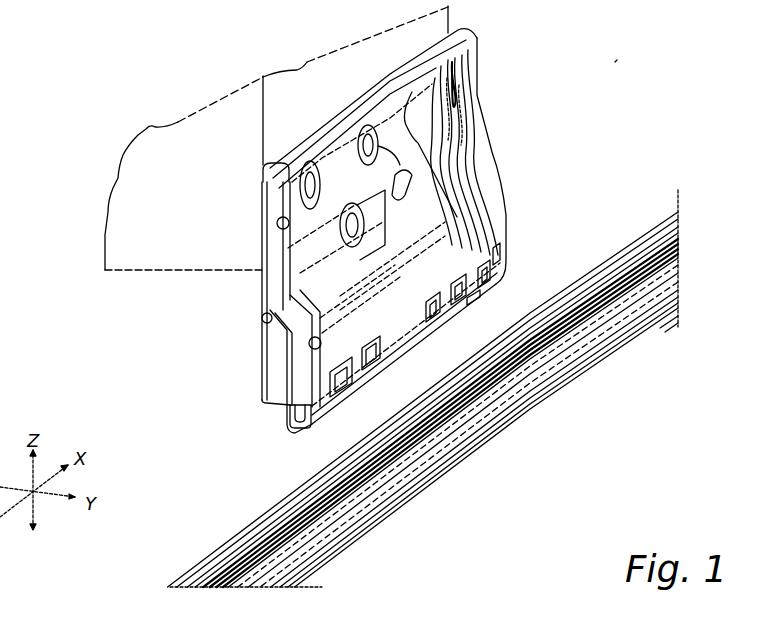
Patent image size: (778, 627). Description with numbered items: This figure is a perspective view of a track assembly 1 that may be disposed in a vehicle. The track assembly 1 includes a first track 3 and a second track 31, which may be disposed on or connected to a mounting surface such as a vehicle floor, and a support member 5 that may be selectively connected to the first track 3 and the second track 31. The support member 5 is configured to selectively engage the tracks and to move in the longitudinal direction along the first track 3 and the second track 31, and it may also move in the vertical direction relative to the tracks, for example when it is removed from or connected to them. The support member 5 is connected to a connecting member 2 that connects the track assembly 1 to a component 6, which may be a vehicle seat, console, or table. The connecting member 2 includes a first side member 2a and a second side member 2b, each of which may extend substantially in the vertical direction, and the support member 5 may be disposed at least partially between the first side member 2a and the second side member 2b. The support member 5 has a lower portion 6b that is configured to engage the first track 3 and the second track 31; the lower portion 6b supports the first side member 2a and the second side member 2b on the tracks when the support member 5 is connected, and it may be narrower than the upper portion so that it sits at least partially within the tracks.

The track assembly 1 is at (617, 61).
The connecting member 2 is at (499, 72).
The first side member 2a is at (492, 157).
The second side member 2b is at (258, 197).
The first track 3 is at (537, 412).
The second track 31 is at (683, 245).
The support member 5 is at (285, 410).
The component 6 is at (224, 135).
The lower portion 6b is at (286, 432).